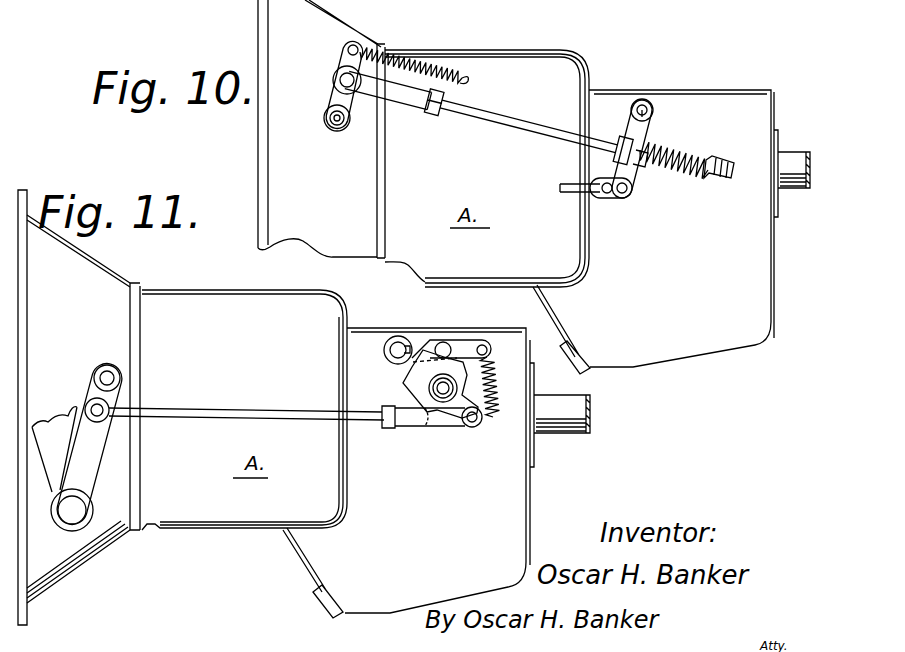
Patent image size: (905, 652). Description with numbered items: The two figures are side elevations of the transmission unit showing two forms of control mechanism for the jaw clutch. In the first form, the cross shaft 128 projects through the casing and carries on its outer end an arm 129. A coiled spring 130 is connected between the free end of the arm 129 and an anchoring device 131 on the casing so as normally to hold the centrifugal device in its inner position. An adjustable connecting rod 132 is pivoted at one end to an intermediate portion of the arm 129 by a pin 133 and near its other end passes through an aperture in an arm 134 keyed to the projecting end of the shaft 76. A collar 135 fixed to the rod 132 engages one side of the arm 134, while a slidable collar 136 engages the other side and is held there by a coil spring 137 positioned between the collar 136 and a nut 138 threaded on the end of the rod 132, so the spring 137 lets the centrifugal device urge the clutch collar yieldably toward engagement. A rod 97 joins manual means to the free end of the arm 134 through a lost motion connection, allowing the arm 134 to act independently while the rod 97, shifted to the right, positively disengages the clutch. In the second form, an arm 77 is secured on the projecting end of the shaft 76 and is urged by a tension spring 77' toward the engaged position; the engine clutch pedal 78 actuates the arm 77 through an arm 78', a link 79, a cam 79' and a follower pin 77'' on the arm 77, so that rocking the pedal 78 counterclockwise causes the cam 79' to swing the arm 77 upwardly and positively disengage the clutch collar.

In FIG. 10, the shaft 76 is at (650, 103).
In FIG. 11, the shaft 76 is at (399, 344).
In FIG. 11, the arm 77 is at (461, 331).
In FIG. 11, the tension spring 77' is at (502, 379).
In FIG. 11, the follower pin 77'' is at (452, 328).
In FIG. 11, the engine clutch pedal 78 is at (77, 447).
In FIG. 11, the arm 78' is at (78, 402).
In FIG. 11, the link 79 is at (295, 403).
In FIG. 11, the cam 79' is at (418, 384).
In FIG. 10, the rod 97 is at (571, 199).
In FIG. 10, the cross shaft 128 is at (333, 131).
In FIG. 10, the arm 129 is at (340, 97).
In FIG. 10, the coiled spring 130 is at (432, 66).
In FIG. 10, the anchoring device 131 is at (470, 80).
In FIG. 10, the adjustable connecting rod 132 is at (490, 118).
In FIG. 10, the pin 133 is at (342, 74).
In FIG. 10, the arm 134 is at (650, 132).
In FIG. 10, the collar 135 is at (621, 134).
In FIG. 10, the slidable collar 136 is at (650, 144).
In FIG. 10, the coil spring 137 is at (670, 172).
In FIG. 10, the nut 138 is at (712, 160).